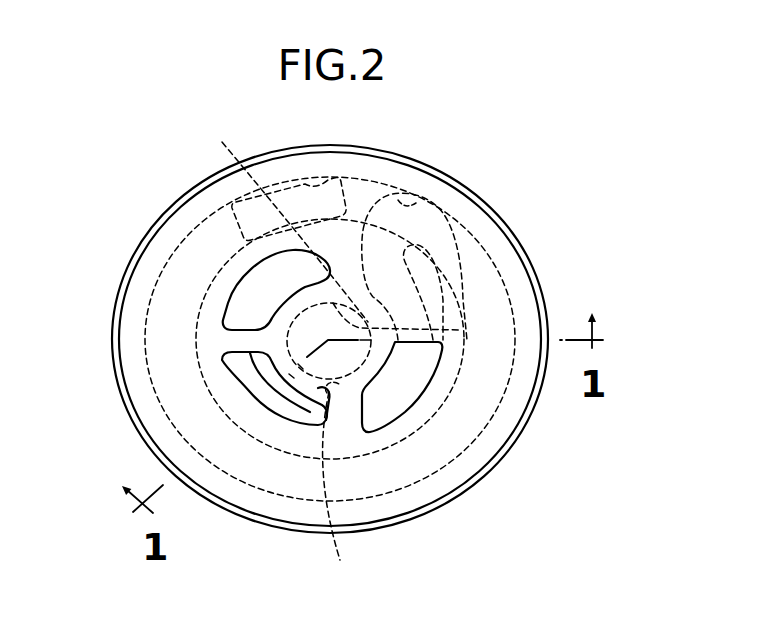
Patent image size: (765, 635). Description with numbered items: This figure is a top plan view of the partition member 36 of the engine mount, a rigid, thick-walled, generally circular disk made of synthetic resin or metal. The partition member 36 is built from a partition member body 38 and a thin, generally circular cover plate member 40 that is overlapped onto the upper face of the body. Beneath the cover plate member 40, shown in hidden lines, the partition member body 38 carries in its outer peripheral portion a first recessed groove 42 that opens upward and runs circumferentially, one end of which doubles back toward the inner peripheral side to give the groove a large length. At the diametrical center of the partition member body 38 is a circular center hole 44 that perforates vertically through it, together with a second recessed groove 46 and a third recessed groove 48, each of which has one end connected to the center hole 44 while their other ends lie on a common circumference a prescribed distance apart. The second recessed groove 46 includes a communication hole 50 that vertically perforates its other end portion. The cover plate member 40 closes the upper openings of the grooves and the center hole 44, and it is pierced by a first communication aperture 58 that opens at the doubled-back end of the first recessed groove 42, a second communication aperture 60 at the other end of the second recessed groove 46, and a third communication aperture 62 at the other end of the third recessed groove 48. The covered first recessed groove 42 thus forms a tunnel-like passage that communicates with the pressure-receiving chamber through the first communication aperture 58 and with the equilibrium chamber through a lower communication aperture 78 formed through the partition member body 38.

The partition member 36 is at (525, 188).
The partition member body 38 is at (157, 213).
The cover plate member 40 is at (461, 489).
The first recessed groove 42 is at (418, 200).
The center hole 44 is at (432, 317).
The second recessed groove 46 is at (338, 489).
The third recessed groove 48 is at (285, 219).
The communication hole 50 is at (272, 385).
The first communication aperture 58 is at (392, 423).
The second communication aperture 60 is at (225, 358).
The third communication aperture 62 is at (236, 289).
The lower communication aperture 78 is at (328, 180).